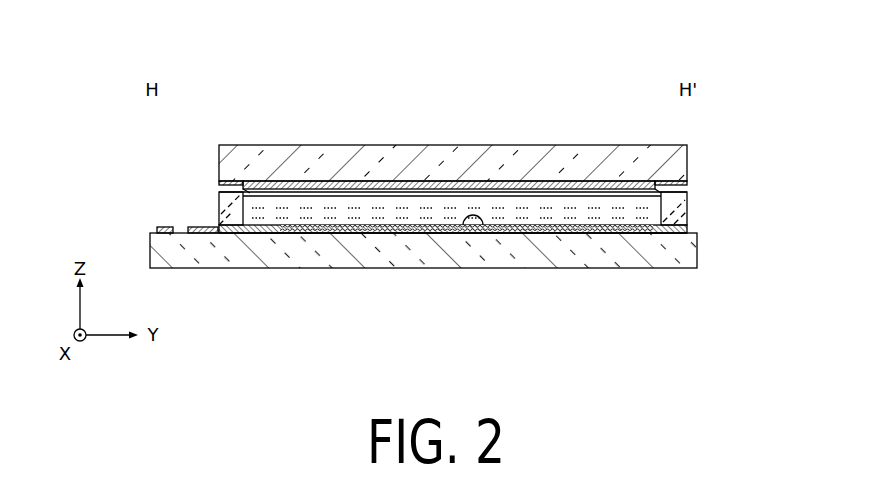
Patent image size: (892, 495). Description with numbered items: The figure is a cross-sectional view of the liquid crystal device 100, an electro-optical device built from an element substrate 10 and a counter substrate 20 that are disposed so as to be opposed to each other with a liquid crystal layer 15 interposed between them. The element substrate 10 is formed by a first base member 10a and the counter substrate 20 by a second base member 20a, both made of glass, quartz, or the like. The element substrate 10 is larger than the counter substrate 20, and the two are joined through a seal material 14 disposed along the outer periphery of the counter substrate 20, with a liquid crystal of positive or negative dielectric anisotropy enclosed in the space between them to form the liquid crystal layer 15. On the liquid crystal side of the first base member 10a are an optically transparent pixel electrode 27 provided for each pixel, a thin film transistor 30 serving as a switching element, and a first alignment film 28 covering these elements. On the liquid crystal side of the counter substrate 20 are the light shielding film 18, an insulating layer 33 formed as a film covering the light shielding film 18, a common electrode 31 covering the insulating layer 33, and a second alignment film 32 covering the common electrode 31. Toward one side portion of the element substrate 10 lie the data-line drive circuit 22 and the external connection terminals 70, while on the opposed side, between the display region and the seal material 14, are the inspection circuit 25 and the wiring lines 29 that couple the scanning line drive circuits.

The liquid crystal device 100 is at (595, 67).
The element substrate 10 is at (770, 228).
The first base member 10a is at (697, 252).
The seal material 14 is at (226, 233).
The liquid crystal layer 15 is at (688, 227).
The light shielding film 18 is at (262, 187).
The counter substrate 20 is at (770, 147).
The second base member 20a is at (688, 166).
The data-line drive circuit 22 is at (200, 226).
The inspection circuit 25 is at (627, 230).
The pixel electrode 27 is at (416, 229).
The first alignment film 28 is at (466, 228).
The wiring lines 29 is at (650, 230).
The transistor 30 is at (417, 337).
The common electrode 31 is at (585, 192).
The second alignment film 32 is at (490, 197).
The insulating layer 33 is at (438, 181).
The external connection terminals 70 is at (163, 226).